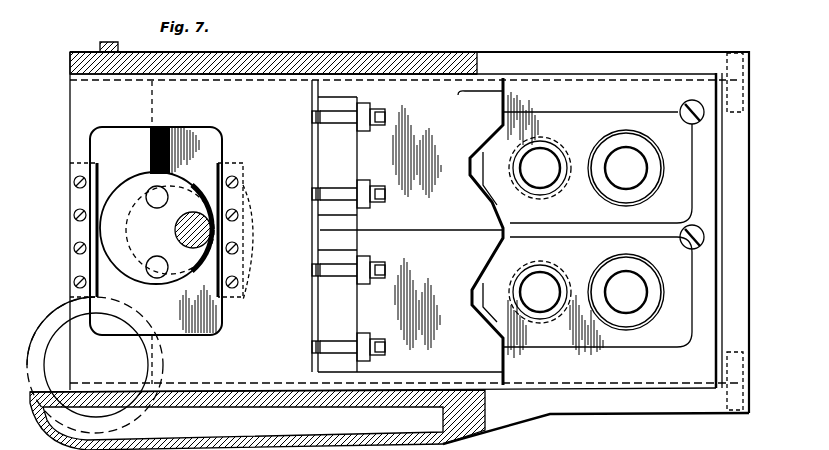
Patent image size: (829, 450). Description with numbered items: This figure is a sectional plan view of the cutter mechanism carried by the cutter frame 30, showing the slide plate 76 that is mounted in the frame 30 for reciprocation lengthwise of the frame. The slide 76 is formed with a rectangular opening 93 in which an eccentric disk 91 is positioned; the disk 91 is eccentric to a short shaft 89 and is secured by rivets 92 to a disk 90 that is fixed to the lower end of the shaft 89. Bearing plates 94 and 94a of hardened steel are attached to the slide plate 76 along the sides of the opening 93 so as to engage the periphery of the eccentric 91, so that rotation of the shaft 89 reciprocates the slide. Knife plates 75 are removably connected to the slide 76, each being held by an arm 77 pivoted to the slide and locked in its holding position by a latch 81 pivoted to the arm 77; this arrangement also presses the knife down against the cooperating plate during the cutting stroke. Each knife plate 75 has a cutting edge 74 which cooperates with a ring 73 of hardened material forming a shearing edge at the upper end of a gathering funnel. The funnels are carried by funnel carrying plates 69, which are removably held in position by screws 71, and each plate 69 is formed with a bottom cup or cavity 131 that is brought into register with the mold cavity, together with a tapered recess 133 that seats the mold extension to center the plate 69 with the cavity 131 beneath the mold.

The cutter frame 30 is at (500, 410).
The slide plate 76 is at (278, 97).
The rectangular opening 93 is at (90, 150).
The bearing plate 94 is at (97, 199).
The bearing plate 94a is at (218, 167).
The eccentric disk 91 is at (143, 174).
The rivets 92 is at (152, 200).
The short shaft 89 is at (185, 230).
The disk 90 is at (198, 297).
The arm 77 is at (340, 115).
The latch 81 is at (368, 111).
The knife plate 75 is at (546, 89).
The cutting edge 74 is at (486, 187).
The ring 73 is at (560, 150).
The recess 133 is at (643, 150).
The bottom cup or cavity 131 is at (625, 178).
The screws 71 is at (688, 104).
The funnel carrying plate 69 is at (616, 220).